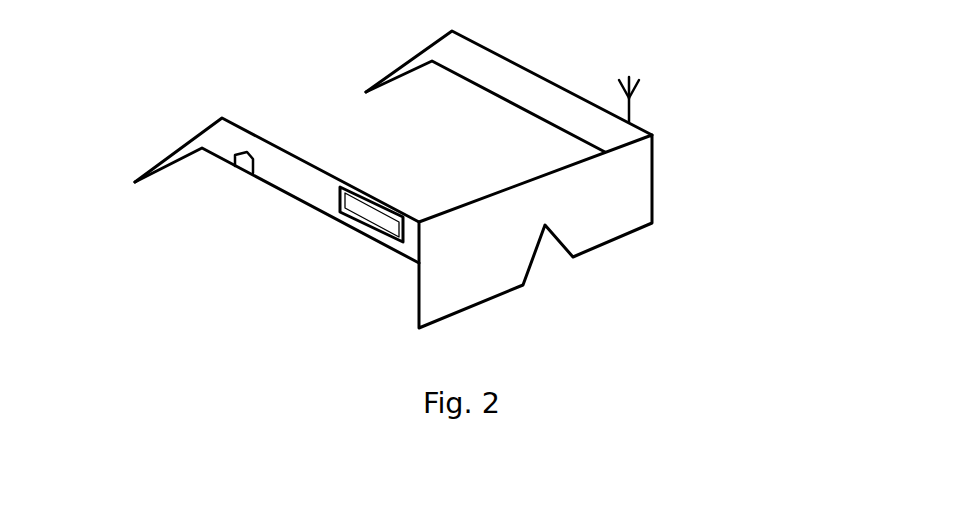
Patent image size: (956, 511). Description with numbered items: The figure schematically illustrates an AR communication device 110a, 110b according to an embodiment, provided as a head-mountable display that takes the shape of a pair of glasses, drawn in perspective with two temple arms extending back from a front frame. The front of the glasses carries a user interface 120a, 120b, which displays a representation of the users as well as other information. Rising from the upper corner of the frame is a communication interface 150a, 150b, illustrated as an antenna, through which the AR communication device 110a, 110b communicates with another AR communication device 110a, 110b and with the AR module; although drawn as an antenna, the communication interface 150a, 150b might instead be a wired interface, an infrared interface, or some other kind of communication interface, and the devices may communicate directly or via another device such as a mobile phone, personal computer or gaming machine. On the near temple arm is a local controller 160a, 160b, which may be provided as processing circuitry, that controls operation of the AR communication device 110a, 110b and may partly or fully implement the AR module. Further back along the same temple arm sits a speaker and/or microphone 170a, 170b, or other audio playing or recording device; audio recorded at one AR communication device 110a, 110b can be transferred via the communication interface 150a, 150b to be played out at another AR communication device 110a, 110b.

The AR communication device 110a is at (453, 170).
The AR communication device 110b is at (453, 170).
The user interface 120a is at (641, 231).
The user interface 120b is at (630, 203).
The communication interface 150a is at (741, 99).
The communication interface 150b is at (631, 101).
The local controller 160a is at (278, 247).
The local controller 160b is at (376, 217).
The speaker and/or microphone 170a is at (148, 193).
The speaker and/or microphone 170b is at (237, 162).